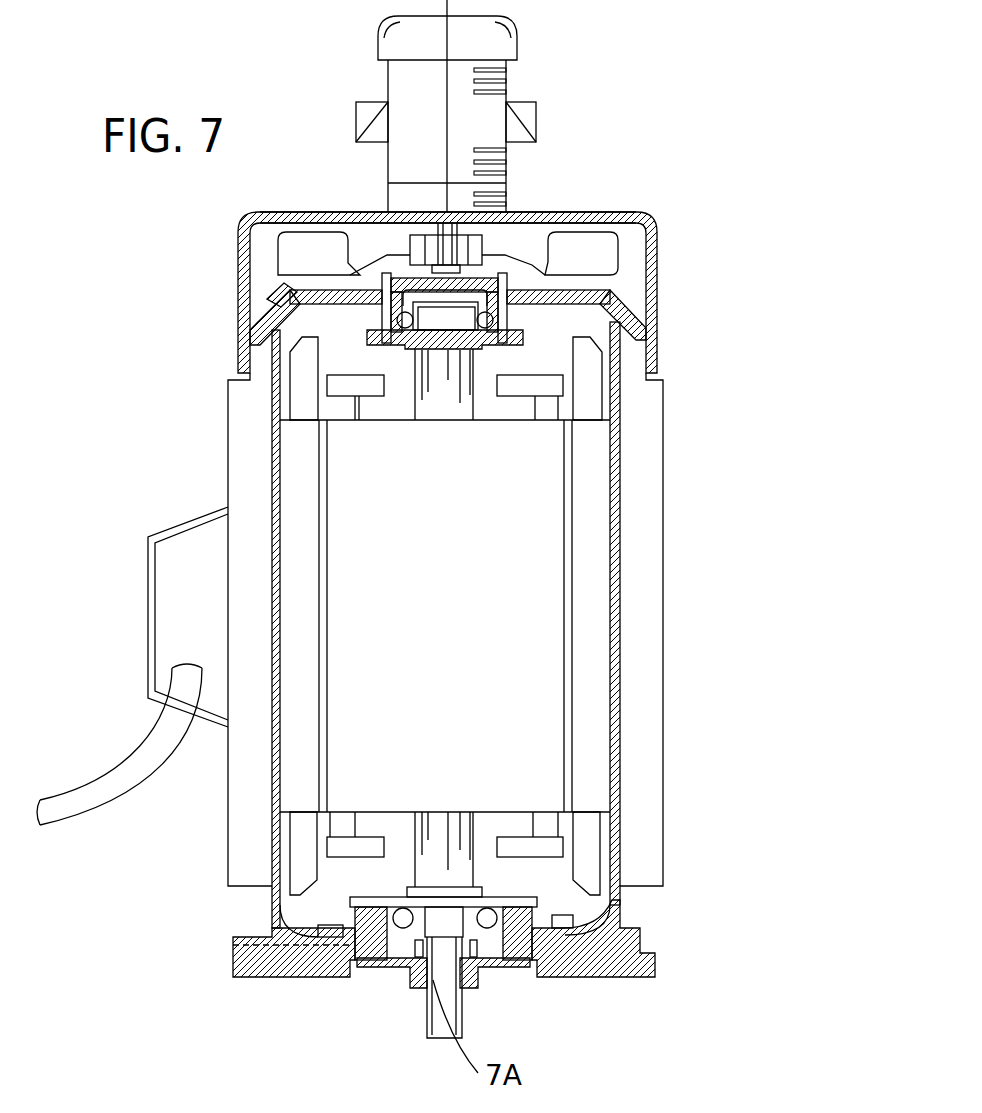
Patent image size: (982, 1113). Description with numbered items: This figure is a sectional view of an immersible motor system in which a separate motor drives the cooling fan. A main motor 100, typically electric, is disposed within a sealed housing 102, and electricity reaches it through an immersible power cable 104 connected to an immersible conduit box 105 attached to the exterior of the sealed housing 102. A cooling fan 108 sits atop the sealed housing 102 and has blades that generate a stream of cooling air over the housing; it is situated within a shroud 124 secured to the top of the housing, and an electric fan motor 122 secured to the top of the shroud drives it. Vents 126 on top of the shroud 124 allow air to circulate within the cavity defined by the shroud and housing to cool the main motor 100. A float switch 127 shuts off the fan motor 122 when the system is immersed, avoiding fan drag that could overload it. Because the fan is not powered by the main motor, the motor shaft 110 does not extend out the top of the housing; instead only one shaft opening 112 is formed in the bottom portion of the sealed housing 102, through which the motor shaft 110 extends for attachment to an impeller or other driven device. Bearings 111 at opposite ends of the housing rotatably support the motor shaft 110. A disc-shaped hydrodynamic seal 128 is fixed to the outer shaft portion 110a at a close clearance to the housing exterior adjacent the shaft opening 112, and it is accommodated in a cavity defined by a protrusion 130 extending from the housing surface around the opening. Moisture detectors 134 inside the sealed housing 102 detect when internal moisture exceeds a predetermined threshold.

The main motor 100 is at (530, 490).
The sealed housing 102 is at (615, 512).
The immersible power cable 104 is at (123, 765).
The immersible conduit box 105 is at (170, 528).
The cooling fan 108 is at (603, 255).
The motor shaft 110 is at (470, 368).
The outer shaft portion 110a is at (433, 1018).
The bearings 111 is at (397, 317).
The shaft opening 112 is at (478, 948).
The fan motor 122 is at (387, 85).
The shroud 124 is at (595, 212).
The vents 126 is at (328, 212).
The float switch 127 is at (268, 292).
The hydrodynamic seal 128 is at (480, 983).
The protrusion 130 is at (260, 958).
The moisture detectors 134 is at (320, 932).